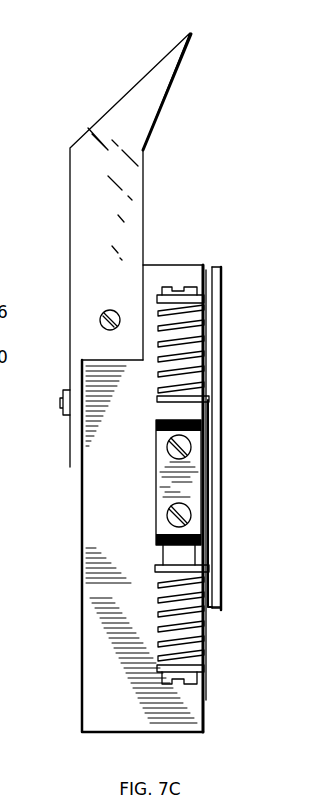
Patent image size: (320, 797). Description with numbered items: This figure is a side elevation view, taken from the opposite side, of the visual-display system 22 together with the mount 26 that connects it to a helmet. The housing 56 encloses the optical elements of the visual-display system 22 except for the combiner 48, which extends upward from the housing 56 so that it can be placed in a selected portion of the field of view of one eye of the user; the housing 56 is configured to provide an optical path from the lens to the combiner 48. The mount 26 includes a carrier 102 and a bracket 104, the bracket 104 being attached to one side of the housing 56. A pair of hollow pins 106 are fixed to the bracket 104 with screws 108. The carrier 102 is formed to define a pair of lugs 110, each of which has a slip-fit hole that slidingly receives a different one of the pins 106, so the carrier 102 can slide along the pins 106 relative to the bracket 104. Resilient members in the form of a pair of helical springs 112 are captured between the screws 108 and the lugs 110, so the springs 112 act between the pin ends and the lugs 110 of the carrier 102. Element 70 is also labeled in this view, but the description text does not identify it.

The combiner 48 is at (115, 103).
The visual-display system 22 is at (182, 263).
The mount 26 is at (223, 263).
The housing 56 is at (82, 693).
The upper spring 70 is at (157, 378).
The bracket 104 is at (156, 458).
The lugs 110 is at (155, 566).
The carrier 102 is at (224, 475).
The helical springs 112 is at (207, 617).
The hollow pins 106 is at (207, 650).
The screws 108 is at (197, 698).